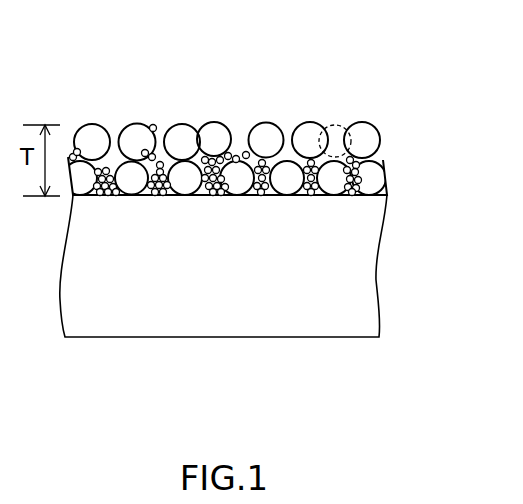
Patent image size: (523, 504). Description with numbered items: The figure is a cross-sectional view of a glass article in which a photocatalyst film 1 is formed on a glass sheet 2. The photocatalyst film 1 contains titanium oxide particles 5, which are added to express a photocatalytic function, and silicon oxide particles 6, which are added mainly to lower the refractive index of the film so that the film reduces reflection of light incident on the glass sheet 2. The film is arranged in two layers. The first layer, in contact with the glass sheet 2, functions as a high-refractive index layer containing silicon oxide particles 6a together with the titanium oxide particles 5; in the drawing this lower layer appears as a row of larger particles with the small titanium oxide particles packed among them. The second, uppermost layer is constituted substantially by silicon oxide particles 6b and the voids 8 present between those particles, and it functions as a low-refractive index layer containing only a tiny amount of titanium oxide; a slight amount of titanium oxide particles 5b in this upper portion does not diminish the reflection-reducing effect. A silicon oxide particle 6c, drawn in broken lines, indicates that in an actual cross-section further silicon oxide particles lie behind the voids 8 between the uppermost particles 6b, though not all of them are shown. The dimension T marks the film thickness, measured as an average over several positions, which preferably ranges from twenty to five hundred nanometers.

The photocatalyst film 1 is at (261, 177).
The glass sheet 2 is at (352, 258).
The titanium oxide particles 5 is at (157, 153).
The titanium oxide particles in the upper portion of the film 5b is at (153, 125).
The silicon oxide particles 6 is at (309, 141).
The silicon oxide particles of the first layer 6a is at (372, 177).
The silicon oxide particles of the uppermost layer 6b is at (361, 141).
The silicon oxide particles behind voids 6c is at (335, 137).
The voids 8 is at (115, 135).